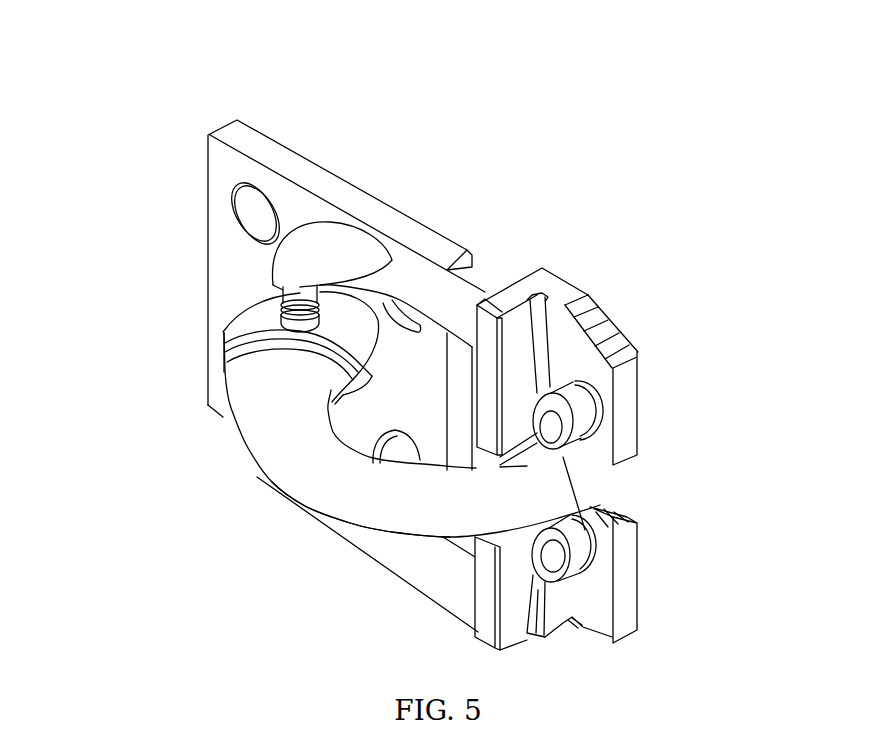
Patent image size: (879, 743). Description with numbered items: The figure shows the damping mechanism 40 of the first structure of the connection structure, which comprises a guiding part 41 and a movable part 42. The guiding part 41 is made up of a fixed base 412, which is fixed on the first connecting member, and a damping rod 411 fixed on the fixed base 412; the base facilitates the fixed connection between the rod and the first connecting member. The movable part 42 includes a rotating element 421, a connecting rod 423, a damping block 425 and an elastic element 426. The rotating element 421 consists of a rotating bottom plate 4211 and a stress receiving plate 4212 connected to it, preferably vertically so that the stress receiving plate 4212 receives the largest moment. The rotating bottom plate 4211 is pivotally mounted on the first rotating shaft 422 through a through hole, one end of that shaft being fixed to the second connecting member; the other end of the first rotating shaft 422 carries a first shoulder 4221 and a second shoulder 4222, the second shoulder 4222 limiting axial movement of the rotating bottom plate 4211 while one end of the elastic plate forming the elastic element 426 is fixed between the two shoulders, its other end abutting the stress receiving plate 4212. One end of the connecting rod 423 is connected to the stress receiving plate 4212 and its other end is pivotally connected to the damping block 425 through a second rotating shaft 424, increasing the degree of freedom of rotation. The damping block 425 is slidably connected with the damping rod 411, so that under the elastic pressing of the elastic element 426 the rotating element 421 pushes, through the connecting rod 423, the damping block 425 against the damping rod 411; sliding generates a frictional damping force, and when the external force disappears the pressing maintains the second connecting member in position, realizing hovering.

The damping mechanism 40 is at (435, 50).
The guiding part 41 is at (327, 370).
The damping rod 411 is at (347, 480).
The fixed base 412 is at (253, 270).
The movable part 42 is at (638, 402).
The rotating element 421 is at (636, 350).
The rotating bottom plate 4211 is at (593, 377).
The stress receiving plate 4212 is at (513, 328).
The first rotating shaft 422 is at (637, 583).
The first shoulder 4221 is at (610, 470).
The second shoulder 4222 is at (600, 413).
The connecting rod 423 is at (422, 285).
The second rotating shaft 424 is at (297, 297).
The damping block 425 is at (263, 325).
The elastic element 426 is at (590, 295).